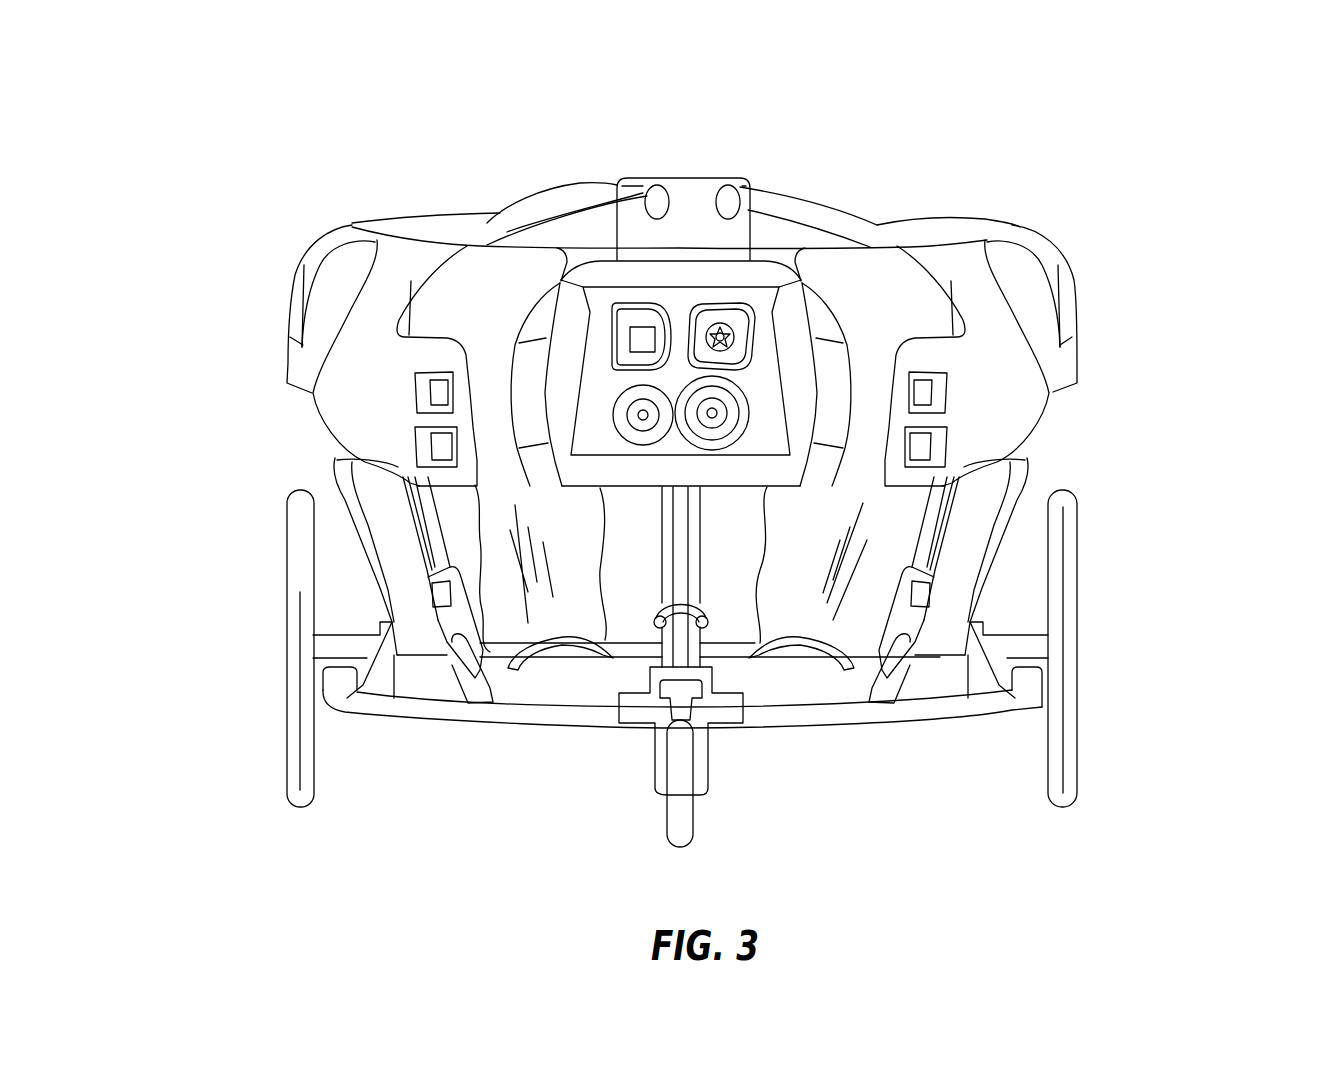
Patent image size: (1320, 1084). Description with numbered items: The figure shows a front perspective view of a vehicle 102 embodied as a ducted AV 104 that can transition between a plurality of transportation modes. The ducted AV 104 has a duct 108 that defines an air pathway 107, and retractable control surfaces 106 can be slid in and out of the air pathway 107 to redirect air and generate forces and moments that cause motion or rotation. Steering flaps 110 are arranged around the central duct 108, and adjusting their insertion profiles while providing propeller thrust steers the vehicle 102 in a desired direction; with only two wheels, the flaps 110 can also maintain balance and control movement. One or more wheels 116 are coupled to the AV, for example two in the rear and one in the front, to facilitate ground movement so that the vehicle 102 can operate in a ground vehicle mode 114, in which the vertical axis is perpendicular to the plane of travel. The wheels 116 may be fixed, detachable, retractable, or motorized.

The vehicle 102 is at (276, 59).
The ducted AV 104 is at (322, 265).
The retractable control surfaces 106 is at (473, 518).
The air pathway 107 is at (664, 164).
The duct 108 is at (639, 618).
The flaps 110 is at (893, 540).
The ground vehicle (GV) mode 114 is at (1050, 833).
The wheels 116 is at (298, 740).